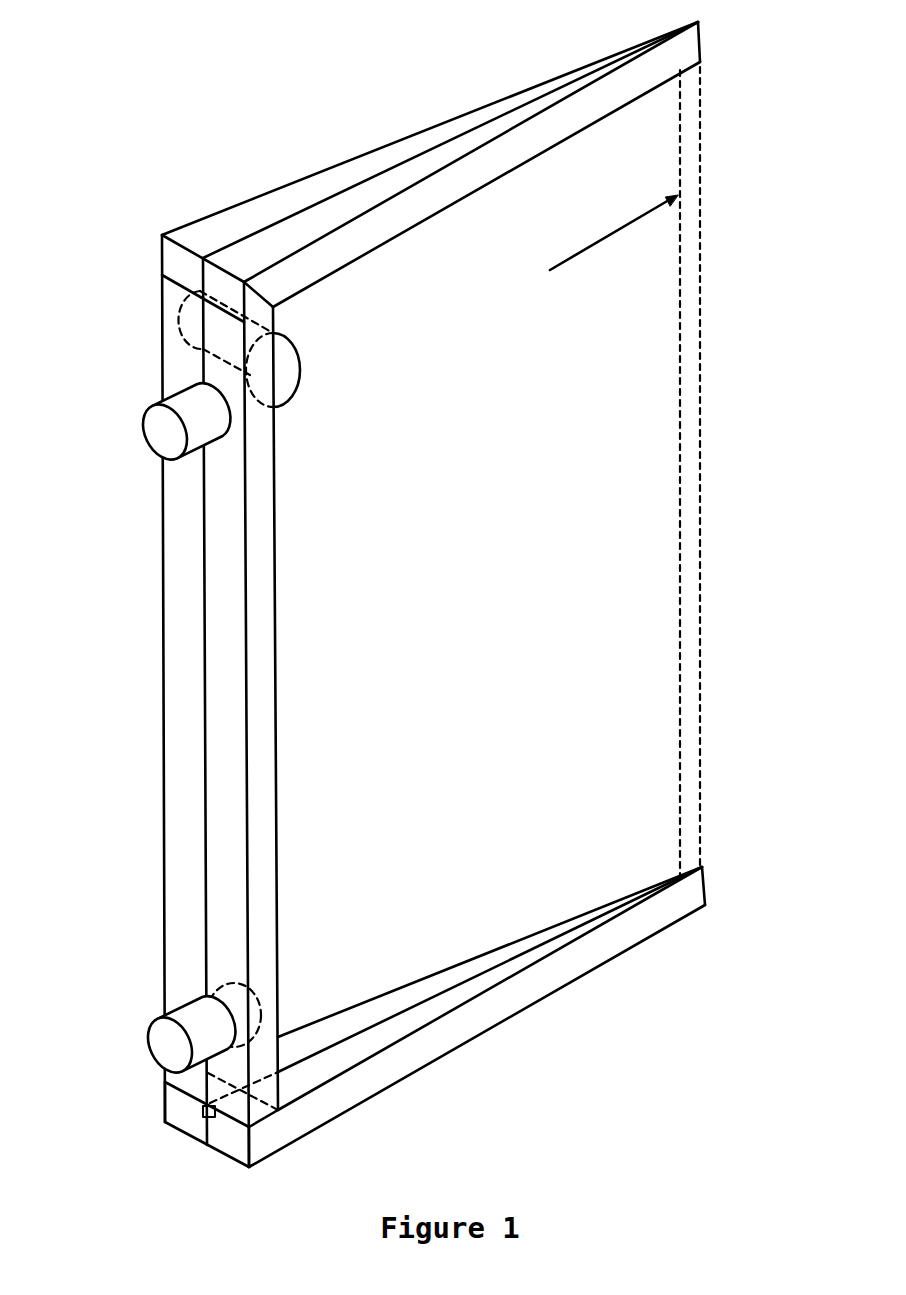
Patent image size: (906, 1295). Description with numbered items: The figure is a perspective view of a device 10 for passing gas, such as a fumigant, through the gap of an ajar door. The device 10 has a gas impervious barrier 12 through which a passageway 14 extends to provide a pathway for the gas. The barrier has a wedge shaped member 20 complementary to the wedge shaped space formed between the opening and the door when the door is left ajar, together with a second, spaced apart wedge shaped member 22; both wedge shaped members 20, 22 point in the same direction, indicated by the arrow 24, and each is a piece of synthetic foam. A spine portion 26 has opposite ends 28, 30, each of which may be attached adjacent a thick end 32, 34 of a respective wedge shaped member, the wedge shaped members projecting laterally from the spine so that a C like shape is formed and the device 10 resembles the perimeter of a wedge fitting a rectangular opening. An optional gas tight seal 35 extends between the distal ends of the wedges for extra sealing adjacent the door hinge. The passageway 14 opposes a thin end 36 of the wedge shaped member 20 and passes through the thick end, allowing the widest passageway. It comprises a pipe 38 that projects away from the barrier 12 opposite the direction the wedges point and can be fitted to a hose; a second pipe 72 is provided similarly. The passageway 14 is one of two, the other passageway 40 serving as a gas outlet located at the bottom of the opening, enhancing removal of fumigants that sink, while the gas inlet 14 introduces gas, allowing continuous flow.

The device 10 is at (126, 62).
The gas impervious barrier 12 is at (177, 368).
The passageway 14 is at (238, 414).
The wedge shaped member 20 is at (298, 200).
The wedge shaped member 22 is at (510, 1003).
The arrow 24 is at (614, 232).
The spine portion 26 is at (270, 807).
The end of spine portion 28 is at (198, 1082).
The end of spine portion 30 is at (175, 300).
The thick end 32 is at (197, 1127).
The thick end 34 is at (223, 282).
The gas tight seal 35 is at (695, 578).
The thin end 36 is at (680, 63).
The pipe 38 is at (146, 447).
The passageway 40 is at (250, 1003).
The pipe 72 is at (157, 1023).